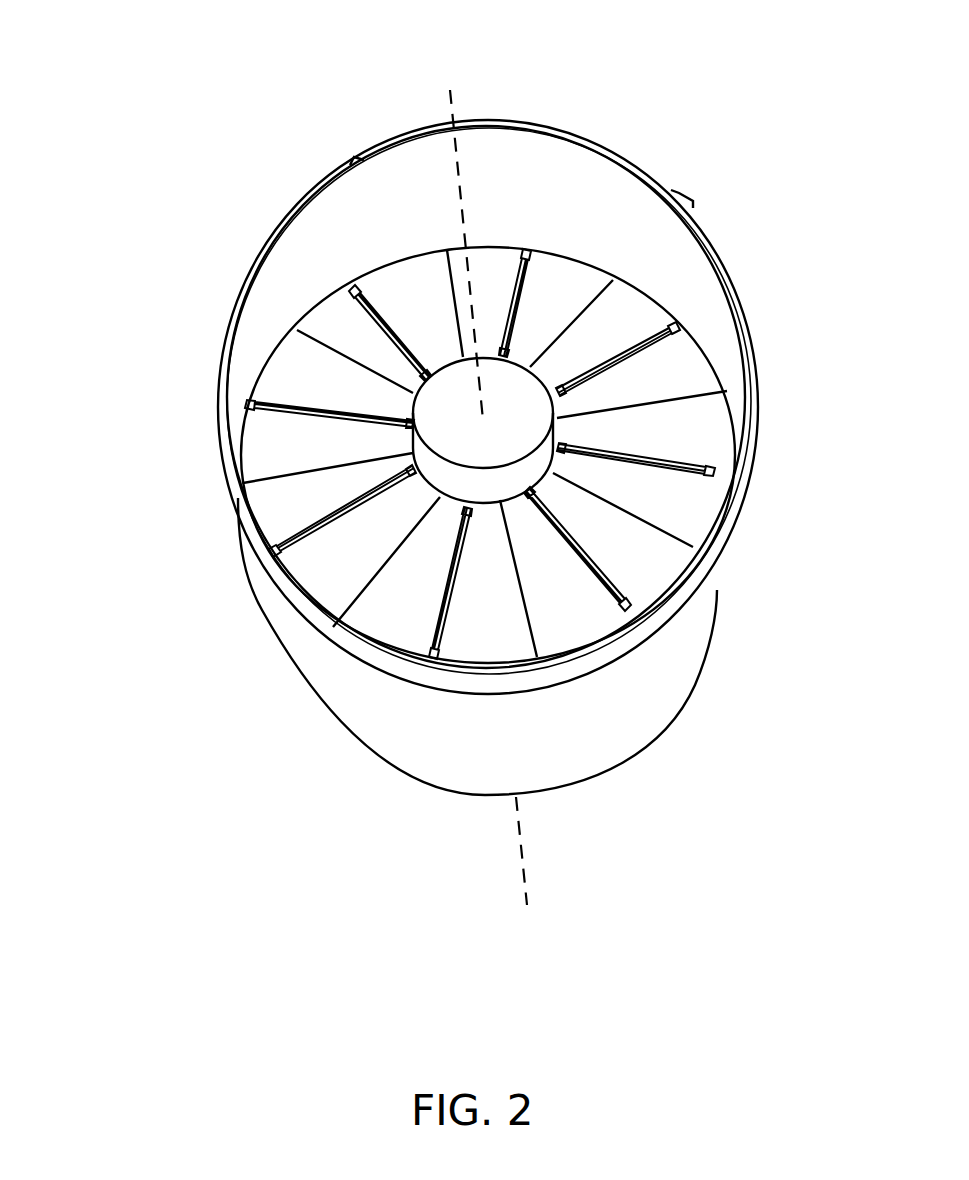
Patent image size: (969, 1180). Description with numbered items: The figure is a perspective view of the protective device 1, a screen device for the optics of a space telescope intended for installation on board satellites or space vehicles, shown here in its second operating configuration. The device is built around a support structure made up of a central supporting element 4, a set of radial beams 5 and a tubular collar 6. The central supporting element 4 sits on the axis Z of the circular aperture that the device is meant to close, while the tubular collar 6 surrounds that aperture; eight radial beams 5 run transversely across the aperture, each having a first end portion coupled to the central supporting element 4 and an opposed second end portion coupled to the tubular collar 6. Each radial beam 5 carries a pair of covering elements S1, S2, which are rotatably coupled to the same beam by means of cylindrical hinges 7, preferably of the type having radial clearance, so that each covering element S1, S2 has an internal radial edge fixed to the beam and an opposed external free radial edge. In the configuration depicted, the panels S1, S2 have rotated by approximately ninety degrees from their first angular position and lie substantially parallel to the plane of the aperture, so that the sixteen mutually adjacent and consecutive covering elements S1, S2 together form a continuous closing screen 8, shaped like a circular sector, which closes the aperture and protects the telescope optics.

The protective device 1 is at (301, 106).
The central supporting element 4 is at (503, 383).
The radial beams 5 is at (387, 340).
The tubular collar 6 is at (263, 255).
The cylindrical hinges 7 is at (470, 503).
The continuous closing screen 8 is at (708, 378).
The covering element S1 is at (305, 352).
The covering element S2 is at (270, 472).
The axis of circular aperture Z is at (506, 489).